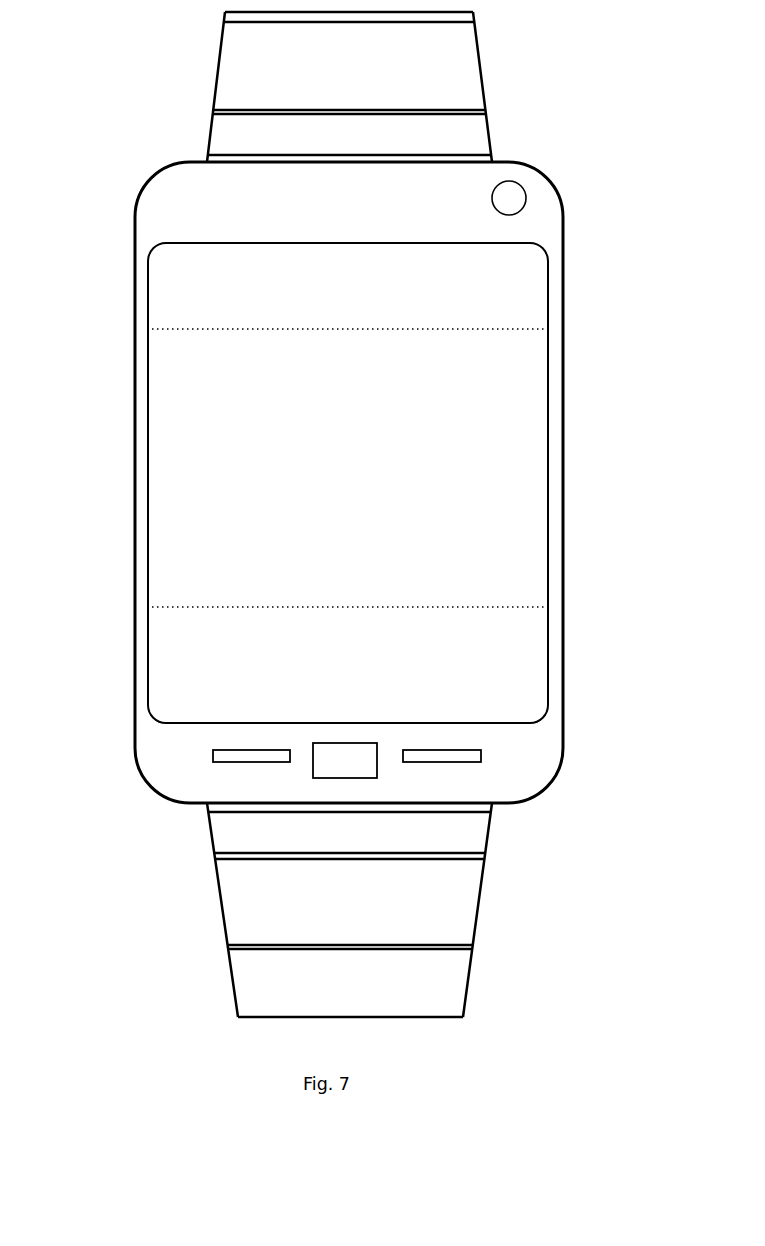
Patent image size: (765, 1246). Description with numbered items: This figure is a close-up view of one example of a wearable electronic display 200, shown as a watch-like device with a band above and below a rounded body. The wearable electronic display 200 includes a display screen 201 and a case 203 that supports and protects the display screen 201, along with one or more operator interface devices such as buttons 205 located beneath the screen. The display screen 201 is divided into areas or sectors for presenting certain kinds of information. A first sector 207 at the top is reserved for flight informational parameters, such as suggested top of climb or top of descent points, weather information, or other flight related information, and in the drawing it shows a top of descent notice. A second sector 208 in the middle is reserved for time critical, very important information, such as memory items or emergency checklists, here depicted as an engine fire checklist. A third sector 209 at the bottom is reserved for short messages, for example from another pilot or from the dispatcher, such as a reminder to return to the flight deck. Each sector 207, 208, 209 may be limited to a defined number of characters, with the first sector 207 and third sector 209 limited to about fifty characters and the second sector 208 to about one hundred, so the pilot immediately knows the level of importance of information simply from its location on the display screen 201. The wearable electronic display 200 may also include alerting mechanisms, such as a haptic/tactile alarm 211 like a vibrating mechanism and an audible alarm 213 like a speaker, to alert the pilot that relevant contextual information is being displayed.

The wearable electronic display 200 is at (657, 160).
The display screen 201 is at (173, 522).
The case 203 is at (157, 213).
The buttons 205 is at (481, 755).
The first sector 207 is at (530, 290).
The second sector 208 is at (503, 448).
The third sector 209 is at (480, 650).
The haptic/tactile alarm 211 is at (190, 195).
The audible alarm 213 is at (527, 190).